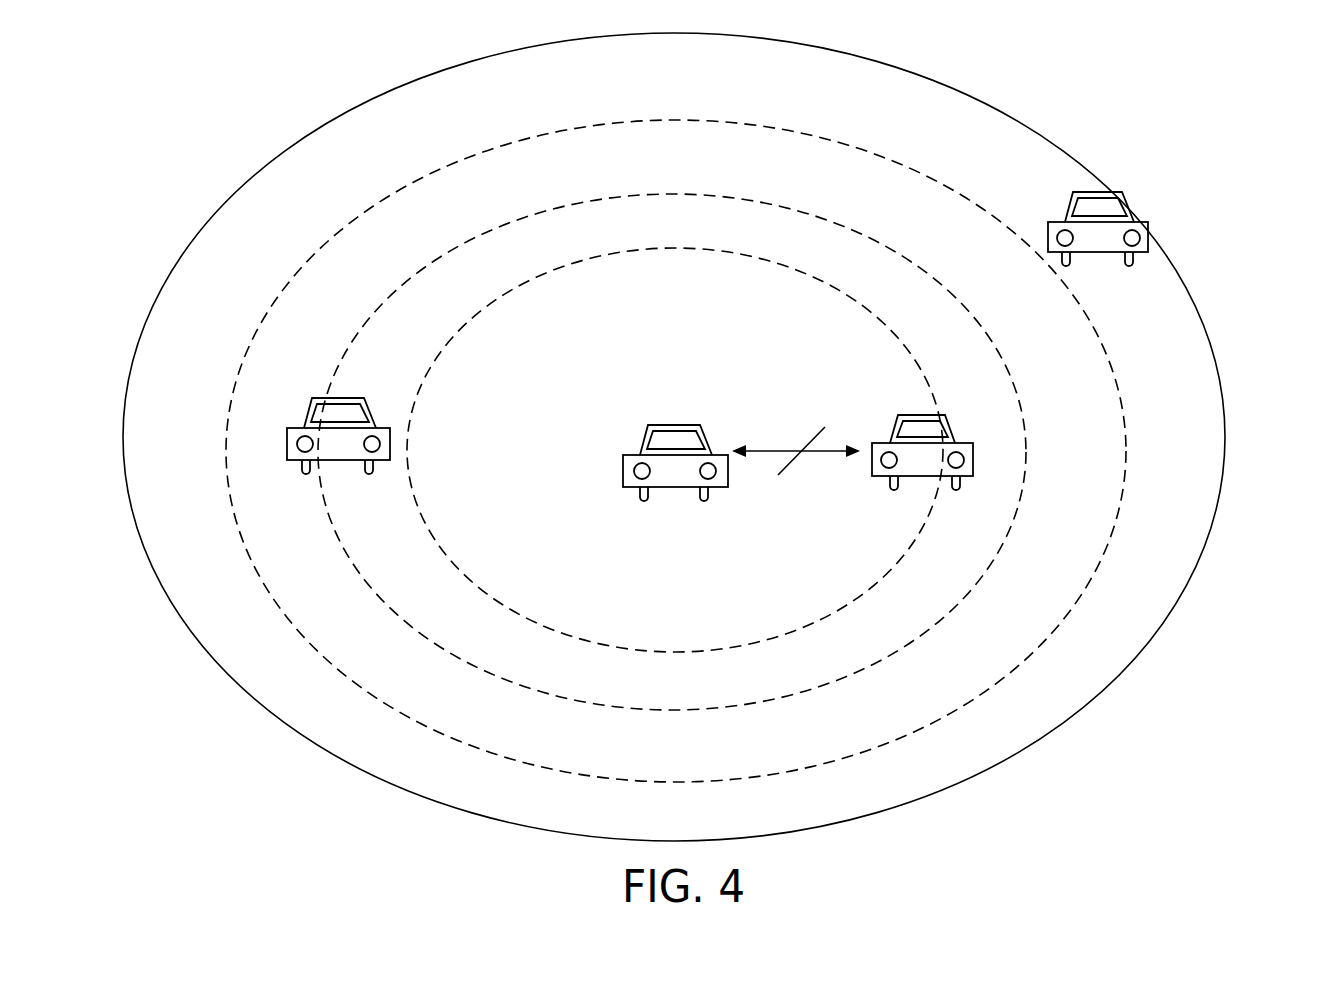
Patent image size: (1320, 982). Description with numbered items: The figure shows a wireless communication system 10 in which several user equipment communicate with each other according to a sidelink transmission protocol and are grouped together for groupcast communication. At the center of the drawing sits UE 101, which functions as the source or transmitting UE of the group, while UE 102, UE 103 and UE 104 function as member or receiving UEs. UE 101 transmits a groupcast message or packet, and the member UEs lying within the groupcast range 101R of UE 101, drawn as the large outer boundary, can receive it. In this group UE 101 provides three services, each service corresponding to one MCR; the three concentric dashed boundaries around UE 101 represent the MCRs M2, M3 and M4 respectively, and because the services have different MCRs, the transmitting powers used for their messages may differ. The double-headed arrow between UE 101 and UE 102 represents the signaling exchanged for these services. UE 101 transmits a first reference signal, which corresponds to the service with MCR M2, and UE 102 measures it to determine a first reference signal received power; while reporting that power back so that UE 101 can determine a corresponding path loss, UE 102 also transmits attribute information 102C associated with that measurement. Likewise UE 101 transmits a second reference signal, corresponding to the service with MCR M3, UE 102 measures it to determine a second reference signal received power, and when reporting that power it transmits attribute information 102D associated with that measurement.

The wireless communication system 10 is at (164, 114).
The user equipment 101 is at (623, 457).
The groupcast range 101R is at (1045, 735).
The user equipment 102 is at (922, 476).
The attribute information 102C is at (803, 450).
The attribute information 102D is at (713, 377).
The user equipment 103 is at (287, 440).
The user equipment 104 is at (1148, 228).
The MCR M2 is at (464, 577).
The MCR M3 is at (430, 638).
The MCR M4 is at (382, 697).